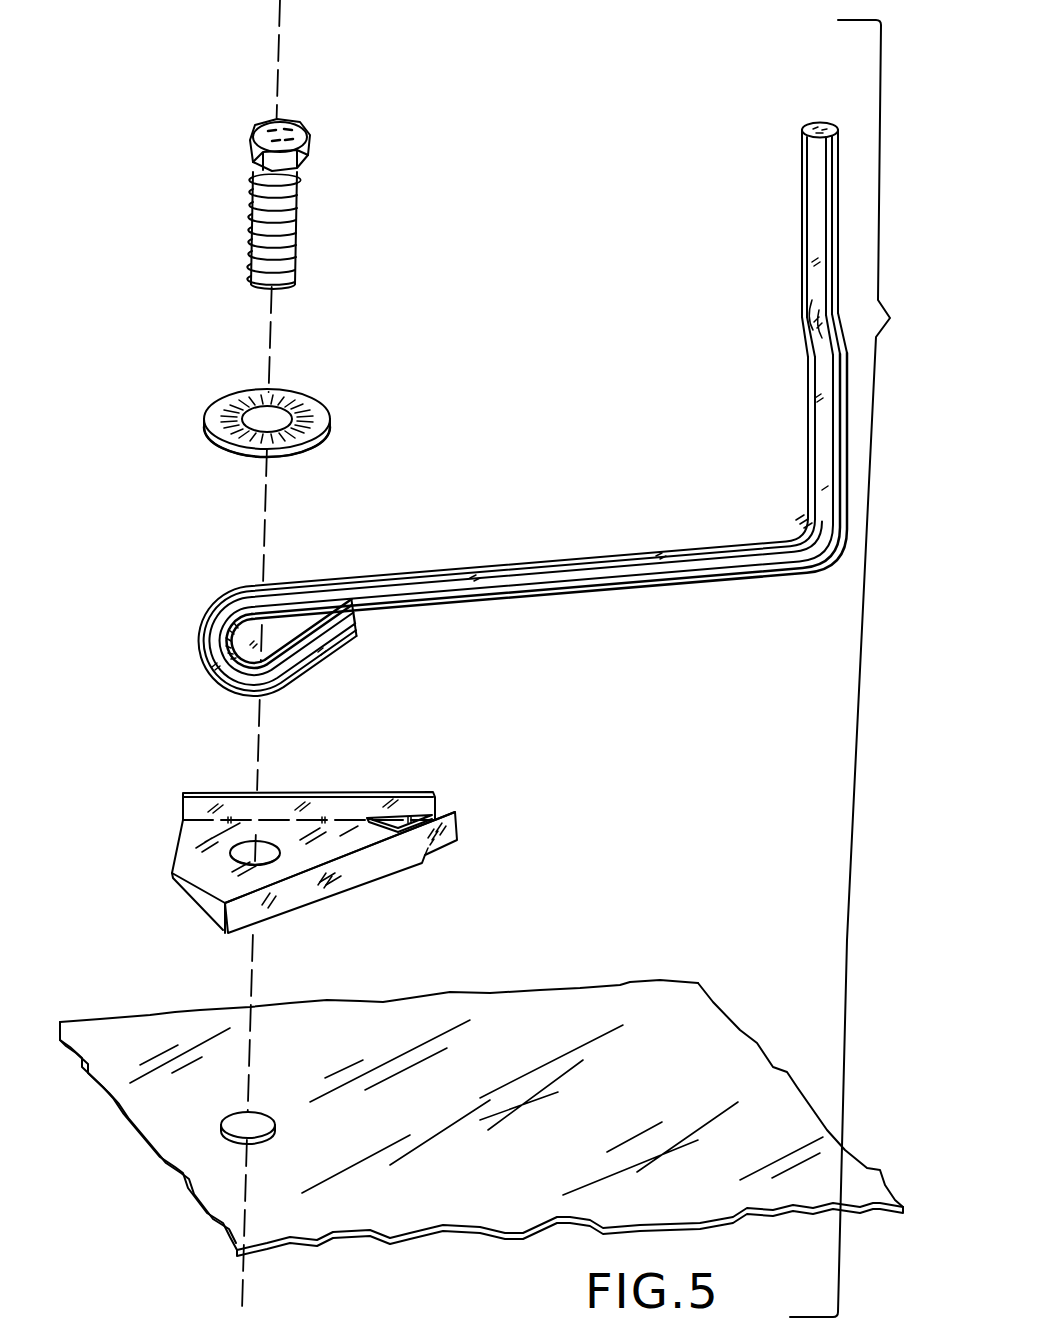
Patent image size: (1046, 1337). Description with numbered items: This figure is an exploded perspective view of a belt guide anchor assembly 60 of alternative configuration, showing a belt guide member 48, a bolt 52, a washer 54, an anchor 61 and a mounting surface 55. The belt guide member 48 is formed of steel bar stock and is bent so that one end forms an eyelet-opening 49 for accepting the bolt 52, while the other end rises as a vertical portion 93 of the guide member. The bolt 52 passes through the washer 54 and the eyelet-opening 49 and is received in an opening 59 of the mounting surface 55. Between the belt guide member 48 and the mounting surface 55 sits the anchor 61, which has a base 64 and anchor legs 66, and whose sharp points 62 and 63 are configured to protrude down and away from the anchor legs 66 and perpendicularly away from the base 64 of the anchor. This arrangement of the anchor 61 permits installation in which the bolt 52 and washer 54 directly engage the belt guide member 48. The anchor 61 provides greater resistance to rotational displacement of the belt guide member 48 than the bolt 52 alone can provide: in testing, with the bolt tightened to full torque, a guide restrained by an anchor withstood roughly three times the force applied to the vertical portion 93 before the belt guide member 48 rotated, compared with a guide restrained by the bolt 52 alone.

The belt guide member 48 is at (546, 414).
The eyelet-opening 49 is at (283, 635).
The bolt 52 is at (290, 200).
The washer 54 is at (312, 409).
The mounting plate 55 is at (481, 1100).
The plate hole 59 is at (240, 1140).
The belt guide anchor assembly 60 is at (862, 668).
The anchor 61 is at (269, 831).
The sharp point 62 is at (423, 863).
The sharp point 63 is at (397, 823).
The base 64 is at (187, 837).
The anchor legs 66 is at (353, 870).
The vertical portion 93 is at (827, 357).